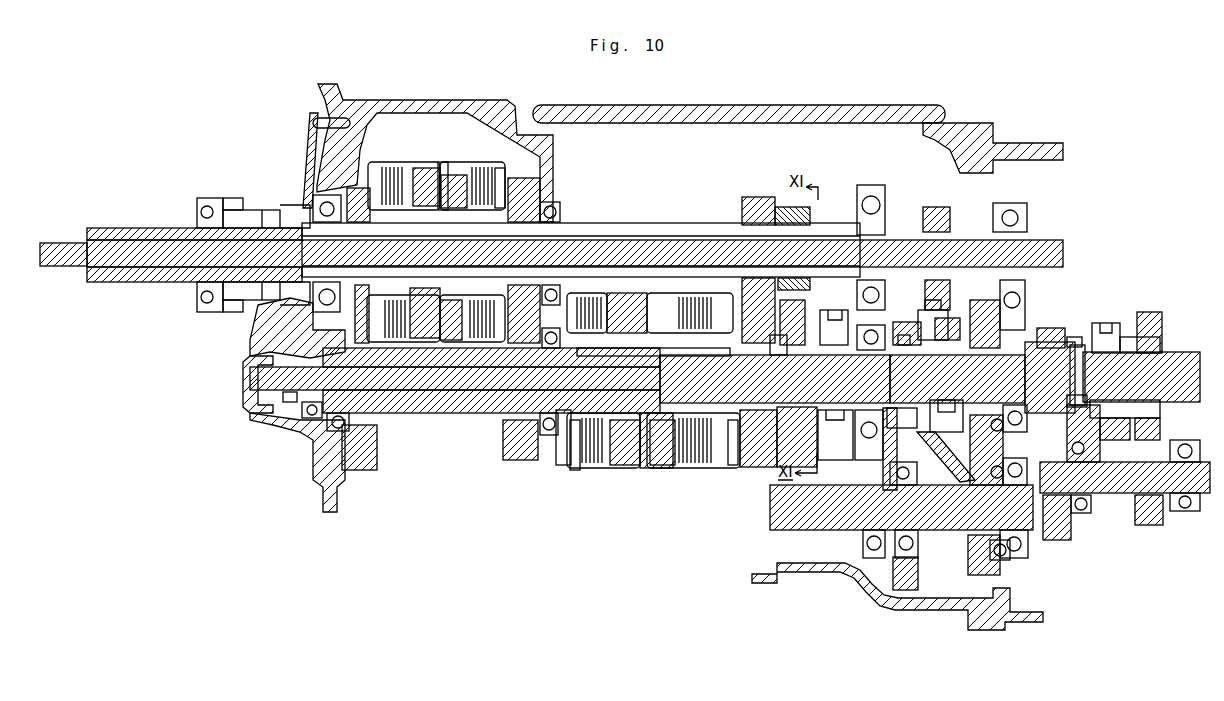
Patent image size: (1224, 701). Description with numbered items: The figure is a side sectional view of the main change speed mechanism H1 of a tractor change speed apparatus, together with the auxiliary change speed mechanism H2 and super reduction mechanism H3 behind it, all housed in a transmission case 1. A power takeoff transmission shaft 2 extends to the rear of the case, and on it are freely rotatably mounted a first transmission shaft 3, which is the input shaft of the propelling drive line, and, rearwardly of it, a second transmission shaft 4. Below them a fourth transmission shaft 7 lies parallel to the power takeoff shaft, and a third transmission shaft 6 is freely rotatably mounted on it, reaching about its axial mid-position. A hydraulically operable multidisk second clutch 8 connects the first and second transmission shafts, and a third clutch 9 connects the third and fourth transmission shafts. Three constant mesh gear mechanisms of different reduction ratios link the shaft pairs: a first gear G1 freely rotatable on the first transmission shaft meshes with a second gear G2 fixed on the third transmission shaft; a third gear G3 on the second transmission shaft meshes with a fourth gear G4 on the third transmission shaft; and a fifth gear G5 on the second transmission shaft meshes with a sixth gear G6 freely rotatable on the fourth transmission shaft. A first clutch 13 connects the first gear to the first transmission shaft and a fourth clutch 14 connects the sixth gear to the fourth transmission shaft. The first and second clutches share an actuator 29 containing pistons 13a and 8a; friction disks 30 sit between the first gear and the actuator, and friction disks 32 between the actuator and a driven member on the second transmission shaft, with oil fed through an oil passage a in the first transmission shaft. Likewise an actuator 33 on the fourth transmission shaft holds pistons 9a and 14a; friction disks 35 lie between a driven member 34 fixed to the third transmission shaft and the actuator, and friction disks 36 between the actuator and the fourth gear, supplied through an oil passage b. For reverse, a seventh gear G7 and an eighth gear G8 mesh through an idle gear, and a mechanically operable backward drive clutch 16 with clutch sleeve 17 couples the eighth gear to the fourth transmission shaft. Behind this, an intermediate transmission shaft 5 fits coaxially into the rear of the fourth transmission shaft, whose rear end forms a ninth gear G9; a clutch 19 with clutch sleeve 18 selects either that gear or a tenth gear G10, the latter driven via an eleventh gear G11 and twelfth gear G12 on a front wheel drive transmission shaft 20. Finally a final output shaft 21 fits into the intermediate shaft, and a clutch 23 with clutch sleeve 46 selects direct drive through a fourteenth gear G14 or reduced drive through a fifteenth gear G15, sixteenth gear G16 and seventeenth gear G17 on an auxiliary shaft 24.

The transmission case 1 is at (540, 110).
The power takeoff transmission shaft 2 is at (86, 245).
The first transmission shaft 3 is at (122, 230).
The second transmission shaft 4 is at (662, 223).
The intermediate transmission shaft 5 is at (978, 420).
The third transmission shaft 6 is at (432, 412).
The fourth transmission shaft 7 is at (272, 378).
The second clutch 8 is at (478, 162).
The piston 8a is at (455, 175).
The third clutch 9 is at (588, 470).
The piston 9a is at (613, 462).
The first clutch 13 is at (390, 162).
The piston 13a is at (430, 170).
The fourth clutch 14 is at (692, 470).
The piston 14a is at (660, 462).
The backward drive clutch 16 is at (832, 462).
The clutch sleeve 17 is at (846, 310).
The clutch sleeve 18 is at (938, 320).
The clutch 19 is at (925, 312).
The front wheel drive transmission shaft 20 is at (778, 528).
The final output shaft 21 is at (1180, 350).
The clutch 23 is at (1090, 300).
The auxiliary shaft 24 is at (1115, 480).
The actuator 29 is at (448, 162).
The friction disks 30 is at (388, 165).
The friction disks 32 is at (492, 178).
The actuator 33 is at (640, 462).
The driven member 34 is at (560, 425).
The friction disks 35 is at (572, 462).
The friction disks 36 is at (720, 462).
The clutch sleeve 46 is at (1098, 323).
The oil passage a is at (268, 205).
The oil passage b is at (292, 400).
The first gear G1 is at (358, 170).
The second gear G2 is at (372, 430).
The third gear G3 is at (538, 185).
The fourth gear G4 is at (512, 440).
The fifth gear G5 is at (752, 200).
The sixth gear G6 is at (750, 450).
The seventh gear G7 is at (790, 207).
The eighth gear G8 is at (785, 455).
The ninth gear G9 is at (905, 322).
The tenth gear G10 is at (982, 302).
The eleventh gear G11 is at (905, 575).
The twelfth gear G12 is at (978, 552).
The fourteenth gear G14 is at (1052, 328).
The fifteenth gear G15 is at (1148, 312).
The sixteenth gear G16 is at (1058, 542).
The seventeenth gear G17 is at (1150, 505).
The main change speed mechanism H1 is at (247, 413).
The auxiliary change speed mechanism H2 is at (932, 592).
The super reduction mechanism H3 is at (1085, 532).